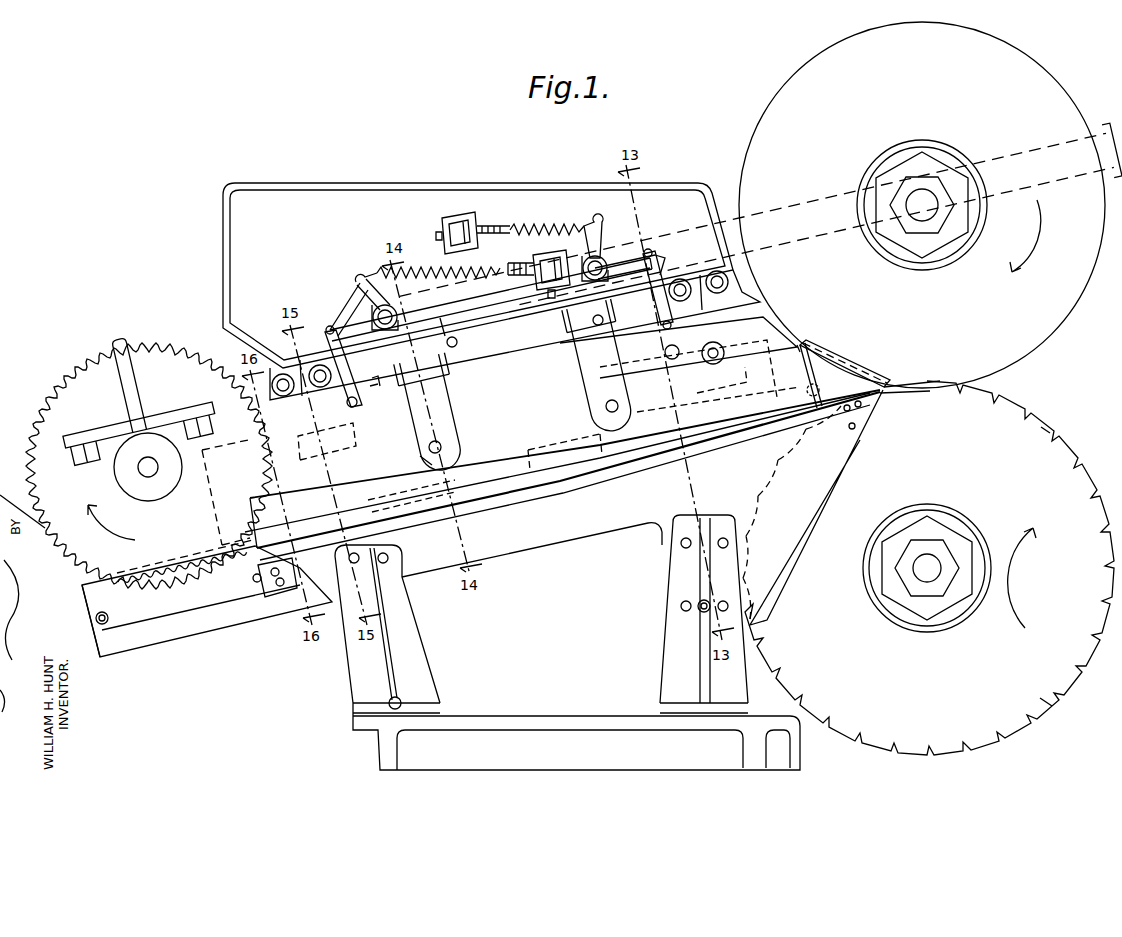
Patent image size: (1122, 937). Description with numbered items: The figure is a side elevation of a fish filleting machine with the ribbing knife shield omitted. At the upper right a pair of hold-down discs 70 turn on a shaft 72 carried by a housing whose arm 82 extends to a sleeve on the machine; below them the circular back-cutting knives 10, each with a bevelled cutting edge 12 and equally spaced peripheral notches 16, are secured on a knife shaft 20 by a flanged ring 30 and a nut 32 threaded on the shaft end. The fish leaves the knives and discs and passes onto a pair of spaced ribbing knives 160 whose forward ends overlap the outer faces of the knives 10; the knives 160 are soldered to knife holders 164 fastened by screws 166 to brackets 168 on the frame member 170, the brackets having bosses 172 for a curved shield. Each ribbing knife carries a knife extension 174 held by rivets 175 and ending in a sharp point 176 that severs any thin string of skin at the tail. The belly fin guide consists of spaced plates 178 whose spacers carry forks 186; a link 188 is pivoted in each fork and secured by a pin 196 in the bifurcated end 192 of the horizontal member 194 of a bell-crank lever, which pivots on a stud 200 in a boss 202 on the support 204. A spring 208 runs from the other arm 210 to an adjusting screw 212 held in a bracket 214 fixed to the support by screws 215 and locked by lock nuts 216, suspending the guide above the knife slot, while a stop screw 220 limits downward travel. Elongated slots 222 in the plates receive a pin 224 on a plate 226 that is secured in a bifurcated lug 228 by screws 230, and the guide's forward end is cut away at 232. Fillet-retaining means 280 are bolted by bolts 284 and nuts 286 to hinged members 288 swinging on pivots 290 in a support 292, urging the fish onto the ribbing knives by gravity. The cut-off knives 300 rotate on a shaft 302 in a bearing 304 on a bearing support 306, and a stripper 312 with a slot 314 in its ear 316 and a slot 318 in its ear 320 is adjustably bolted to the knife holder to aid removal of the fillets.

The circular cutting knives 10 is at (1046, 694).
The cutting edge 12 is at (1020, 727).
The peripheral notches 16 is at (1045, 428).
The knife shaft 20 is at (923, 580).
The flanged ring 30 is at (975, 590).
The nut 32 is at (941, 585).
The hold-down discs 70 is at (1038, 80).
The shaft 72 is at (920, 218).
The arm 82 is at (729, 212).
The ribbing knives 160 is at (546, 476).
The knife holders 164 is at (580, 530).
The screws 166 is at (388, 560).
The brackets 168 is at (414, 648).
The frame member 170 is at (548, 722).
The bosses 172 is at (401, 702).
The knife extension 174 is at (866, 418).
The rivets 175 is at (850, 428).
The sharp point 176 is at (890, 392).
The plates 178 is at (770, 335).
The fork 186 is at (663, 326).
The link 188 is at (658, 268).
The bifurcated end 192 is at (664, 250).
The horizontal member 194 is at (342, 320).
The pin 196 is at (330, 326).
The stud 200 is at (397, 318).
The boss 202 is at (465, 322).
The support 204 is at (492, 318).
The spring 208 is at (560, 226).
The arm 210 is at (600, 224).
The adjusting screw 212 is at (515, 259).
The bracket 214 is at (460, 222).
The screws 215 is at (440, 236).
The lock nuts 216 is at (487, 226).
The stop screw 220 is at (362, 392).
The elongated slots 222 is at (675, 345).
The pin 224 is at (728, 345).
The plate 226 is at (288, 402).
The bifurcated lug 228 is at (692, 290).
The screws 230 is at (728, 282).
The cut-away forward end 232 is at (853, 362).
The fillet-retaining means 280 is at (800, 346).
The bolts 284 is at (424, 462).
The nuts 286 is at (442, 447).
The hinged members 288 is at (440, 384).
The pivot 290 is at (462, 345).
The support 292 is at (590, 325).
The cut-off knives 300 is at (94, 373).
The shaft 302 is at (145, 477).
The bearing 304 is at (117, 477).
The bearing support 306 is at (155, 420).
The stripper 312 is at (215, 598).
The slot 314 is at (290, 574).
The ear 316 is at (272, 585).
The slot 318 is at (109, 616).
The ear 320 is at (103, 652).